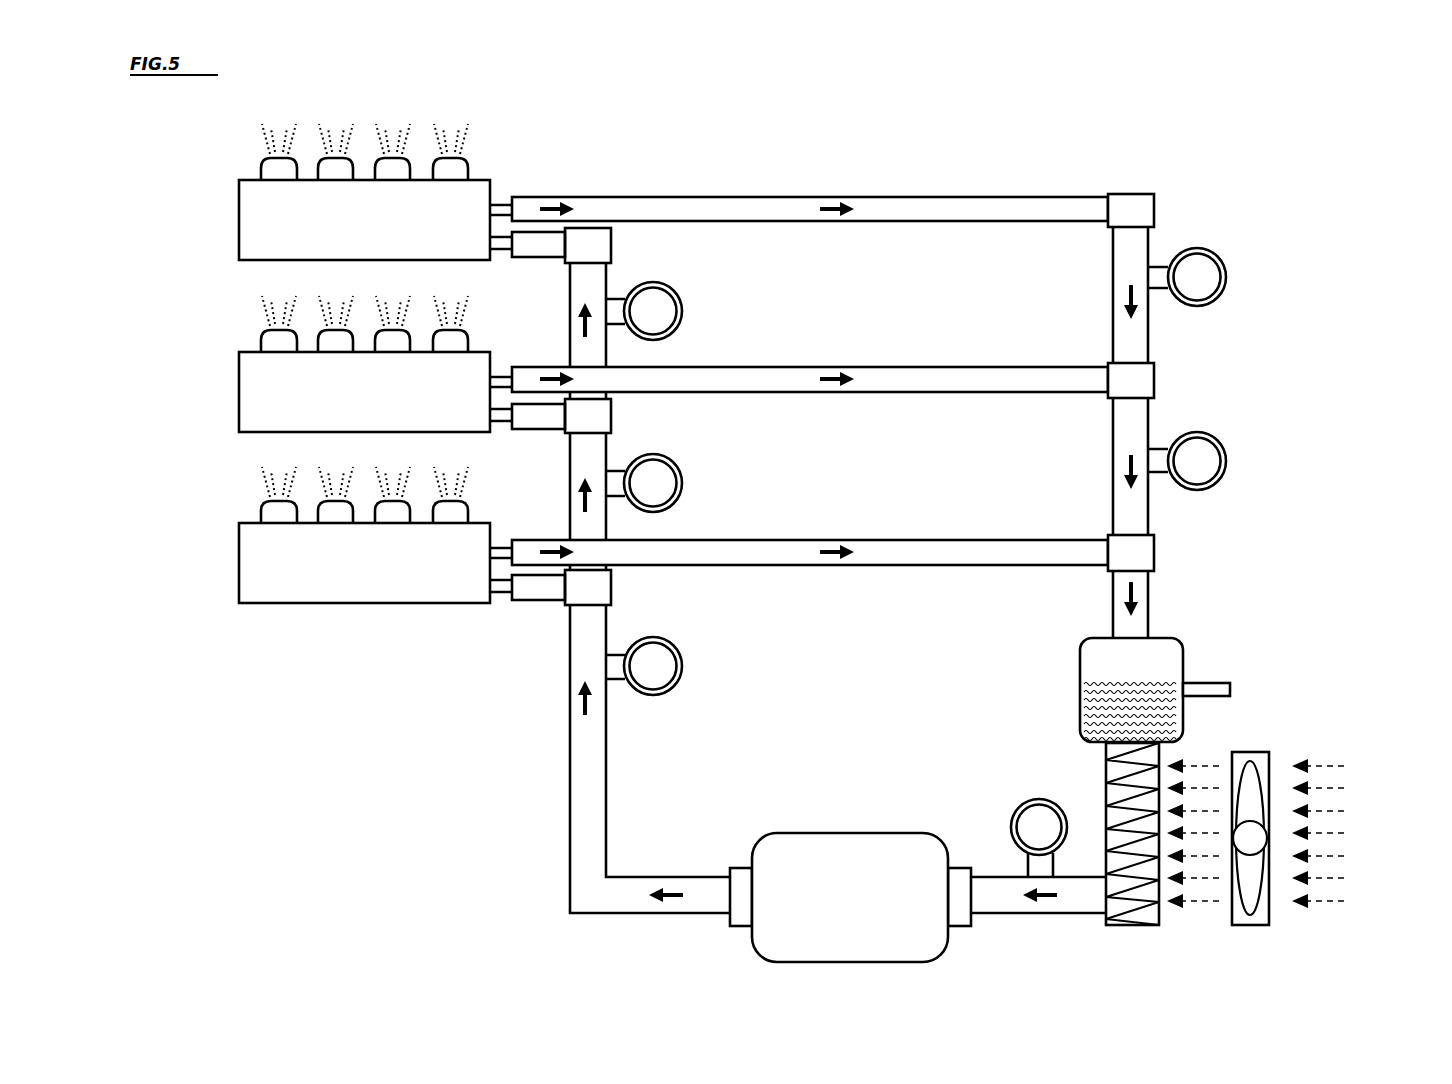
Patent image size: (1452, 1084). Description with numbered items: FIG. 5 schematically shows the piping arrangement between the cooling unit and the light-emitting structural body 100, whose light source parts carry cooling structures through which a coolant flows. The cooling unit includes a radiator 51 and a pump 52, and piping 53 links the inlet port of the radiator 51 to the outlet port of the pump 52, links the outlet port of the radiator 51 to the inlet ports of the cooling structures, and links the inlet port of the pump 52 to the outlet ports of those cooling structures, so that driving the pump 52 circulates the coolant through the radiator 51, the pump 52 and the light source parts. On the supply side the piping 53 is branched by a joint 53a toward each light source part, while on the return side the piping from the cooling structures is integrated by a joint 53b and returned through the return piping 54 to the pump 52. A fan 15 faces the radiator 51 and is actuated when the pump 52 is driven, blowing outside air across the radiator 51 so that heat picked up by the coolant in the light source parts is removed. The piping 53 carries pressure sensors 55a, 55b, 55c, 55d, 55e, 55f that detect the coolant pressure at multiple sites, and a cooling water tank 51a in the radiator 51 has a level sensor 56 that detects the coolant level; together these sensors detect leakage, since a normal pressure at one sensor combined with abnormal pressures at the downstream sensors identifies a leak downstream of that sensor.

The light-emitting structural body 100 is at (252, 214).
The piping 53 is at (936, 190).
The joint 53a is at (582, 255).
The joint 53b is at (1130, 190).
The return pipe 54 is at (838, 588).
The pressure sensor 55a is at (676, 643).
The pressure sensor 55b is at (676, 460).
The pressure sensor 55c is at (676, 288).
The pressure sensor 55d is at (1223, 258).
The pressure sensor 55e is at (1223, 442).
The pressure sensor 55f is at (1012, 810).
The pump 52 is at (822, 833).
The radiator 51 is at (1100, 775).
The cooling water tank 51a is at (1080, 652).
The level sensor 56 is at (1212, 682).
The fan 15 is at (1256, 742).